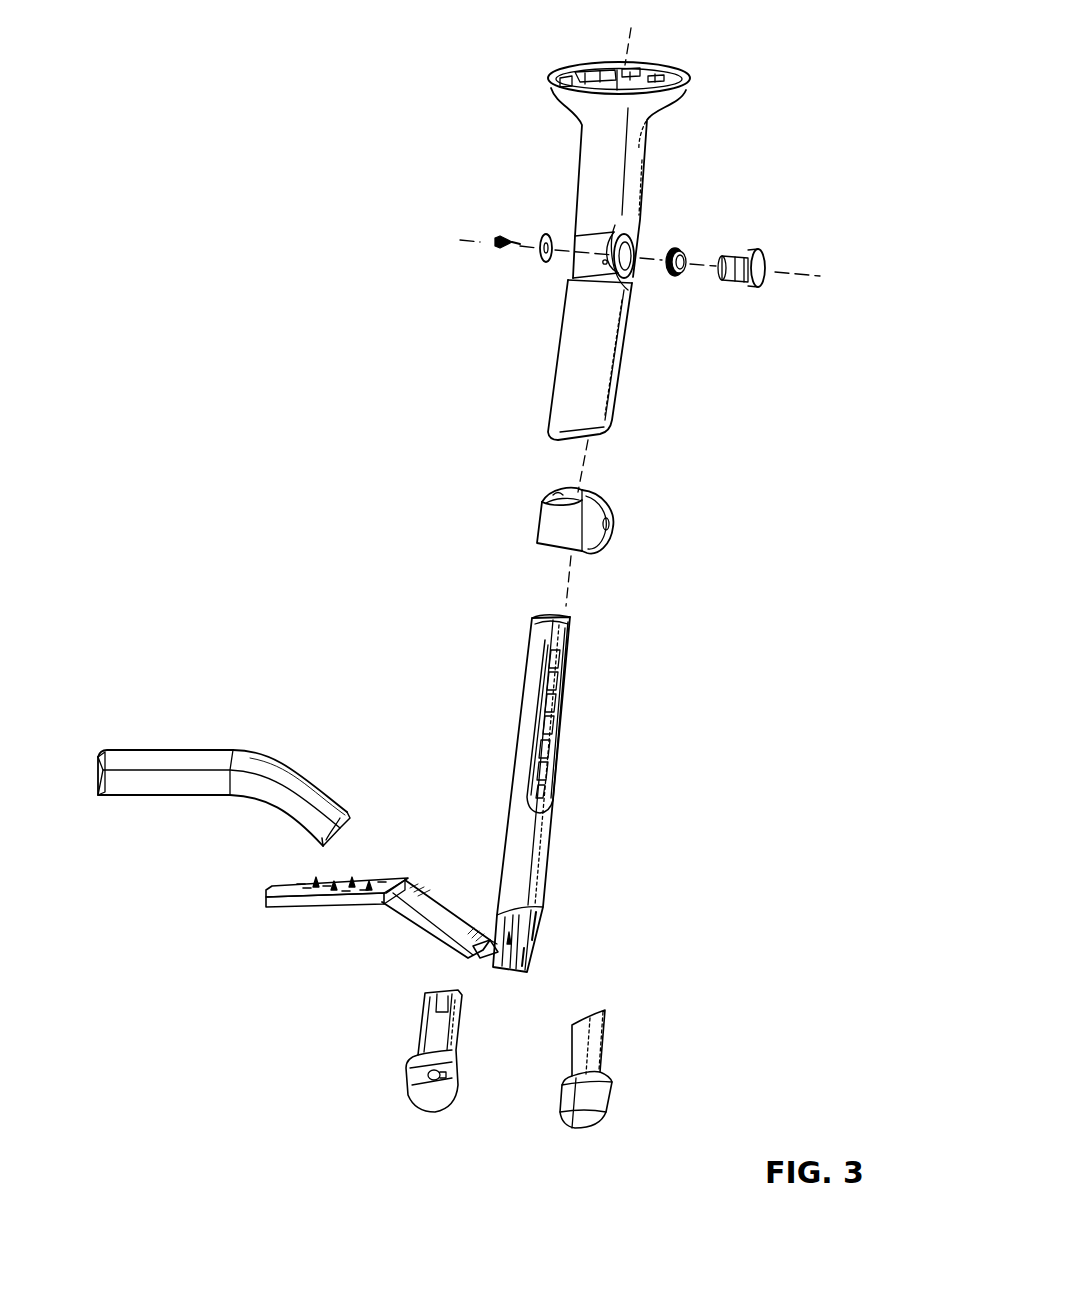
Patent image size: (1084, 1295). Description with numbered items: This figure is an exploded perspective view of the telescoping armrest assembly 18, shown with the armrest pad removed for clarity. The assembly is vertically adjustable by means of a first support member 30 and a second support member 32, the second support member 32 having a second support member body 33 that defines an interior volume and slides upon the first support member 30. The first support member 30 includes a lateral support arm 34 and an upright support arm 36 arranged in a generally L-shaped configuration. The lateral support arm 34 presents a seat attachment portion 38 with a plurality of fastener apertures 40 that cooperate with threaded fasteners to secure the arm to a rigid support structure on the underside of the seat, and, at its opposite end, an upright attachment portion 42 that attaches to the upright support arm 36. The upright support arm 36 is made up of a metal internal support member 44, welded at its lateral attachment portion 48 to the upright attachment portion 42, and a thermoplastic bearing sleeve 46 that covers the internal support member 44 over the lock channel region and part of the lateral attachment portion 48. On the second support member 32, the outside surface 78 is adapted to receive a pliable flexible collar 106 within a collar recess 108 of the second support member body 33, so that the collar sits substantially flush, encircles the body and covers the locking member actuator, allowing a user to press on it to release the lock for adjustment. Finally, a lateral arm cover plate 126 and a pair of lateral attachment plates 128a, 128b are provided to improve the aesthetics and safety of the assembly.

The telescoping armrest assembly 18 is at (777, 82).
The outside surface 78 is at (613, 183).
The collar recess 108 is at (584, 266).
The second support member 32 is at (664, 360).
The second support member body 33 is at (607, 378).
The flexible collar 106 is at (606, 507).
The first support member 30 is at (587, 615).
The upright support arm 36 is at (527, 650).
The bearing sleeve 46 is at (517, 797).
The internal support member 44 is at (527, 924).
The lateral attachment portion 48 is at (520, 951).
The lateral support arm 34 is at (405, 883).
The upright attachment portion 42 is at (470, 955).
The fastener apertures 40 is at (287, 892).
The seat attachment portion 38 is at (290, 886).
The lateral arm cover plate 126 is at (180, 750).
The lateral attachment plate 128a is at (415, 1060).
The lateral attachment plate 128b is at (605, 1080).